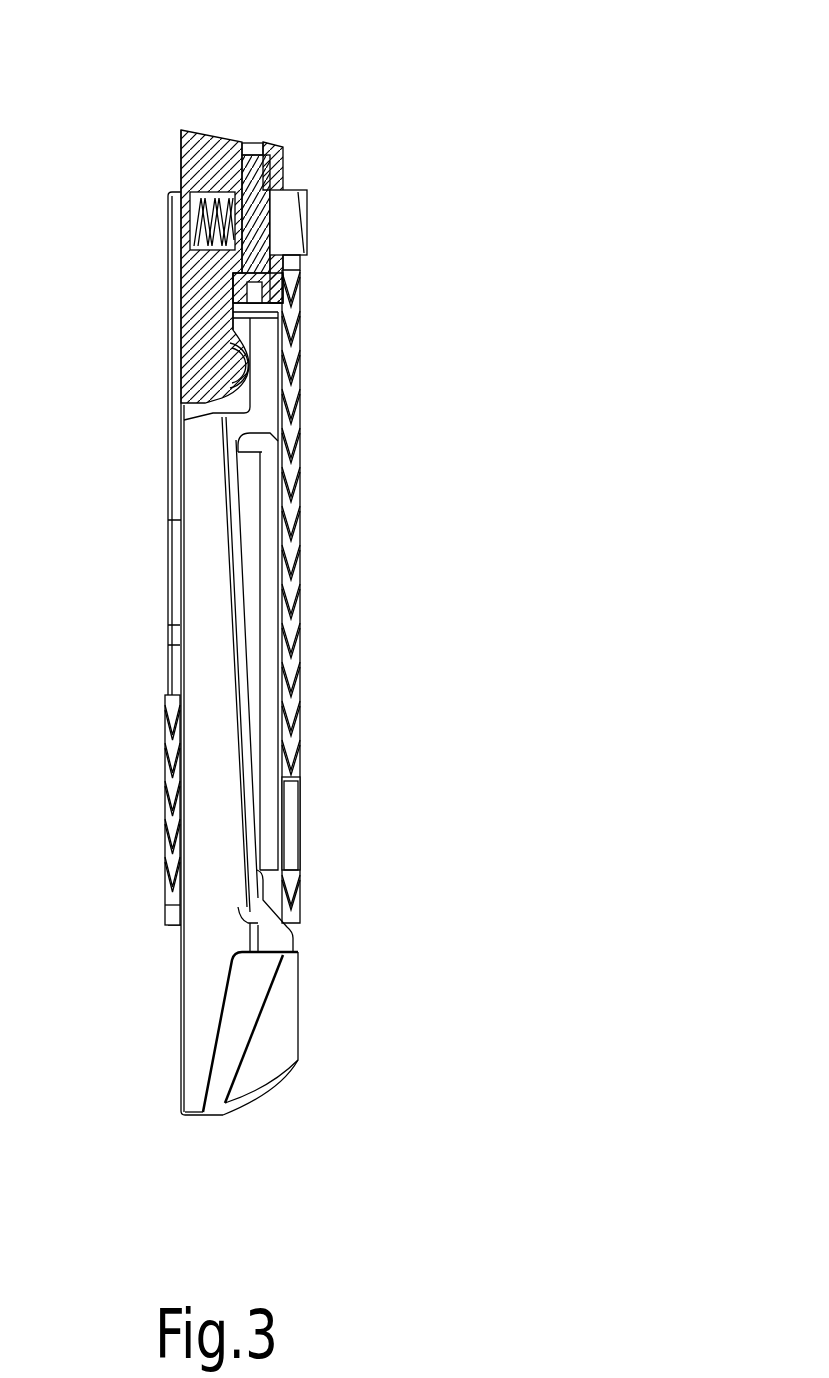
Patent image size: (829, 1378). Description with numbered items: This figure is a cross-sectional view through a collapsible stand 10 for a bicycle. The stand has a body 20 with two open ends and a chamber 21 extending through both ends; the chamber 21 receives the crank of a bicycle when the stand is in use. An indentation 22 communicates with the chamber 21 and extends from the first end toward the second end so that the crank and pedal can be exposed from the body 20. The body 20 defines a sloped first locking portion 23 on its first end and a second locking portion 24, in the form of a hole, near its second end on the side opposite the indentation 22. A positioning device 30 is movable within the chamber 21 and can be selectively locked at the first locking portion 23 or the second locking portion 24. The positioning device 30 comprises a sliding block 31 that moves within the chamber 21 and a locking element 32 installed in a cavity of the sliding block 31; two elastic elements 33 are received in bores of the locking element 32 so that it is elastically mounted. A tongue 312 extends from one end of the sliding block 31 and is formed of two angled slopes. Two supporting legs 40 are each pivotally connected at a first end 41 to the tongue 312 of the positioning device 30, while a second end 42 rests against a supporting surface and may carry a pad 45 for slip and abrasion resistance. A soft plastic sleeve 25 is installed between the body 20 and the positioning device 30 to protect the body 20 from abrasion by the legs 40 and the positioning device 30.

The collapsible stand 10 is at (385, 931).
The body 20 is at (297, 618).
The chamber 21 is at (258, 535).
The indentation 22 is at (178, 625).
The first locking portion 23 is at (287, 257).
The second locking portion 24 is at (297, 800).
The sleeve 25 is at (288, 660).
The positioning device 30 is at (366, 64).
The sliding block 31 is at (180, 157).
The tongue 312 is at (180, 300).
The locking element 32 is at (288, 208).
The elastic element 33 is at (205, 218).
The supporting leg 40 is at (192, 790).
The first end 41 is at (258, 340).
The second end 42 is at (193, 1028).
The pad 45 is at (280, 1027).